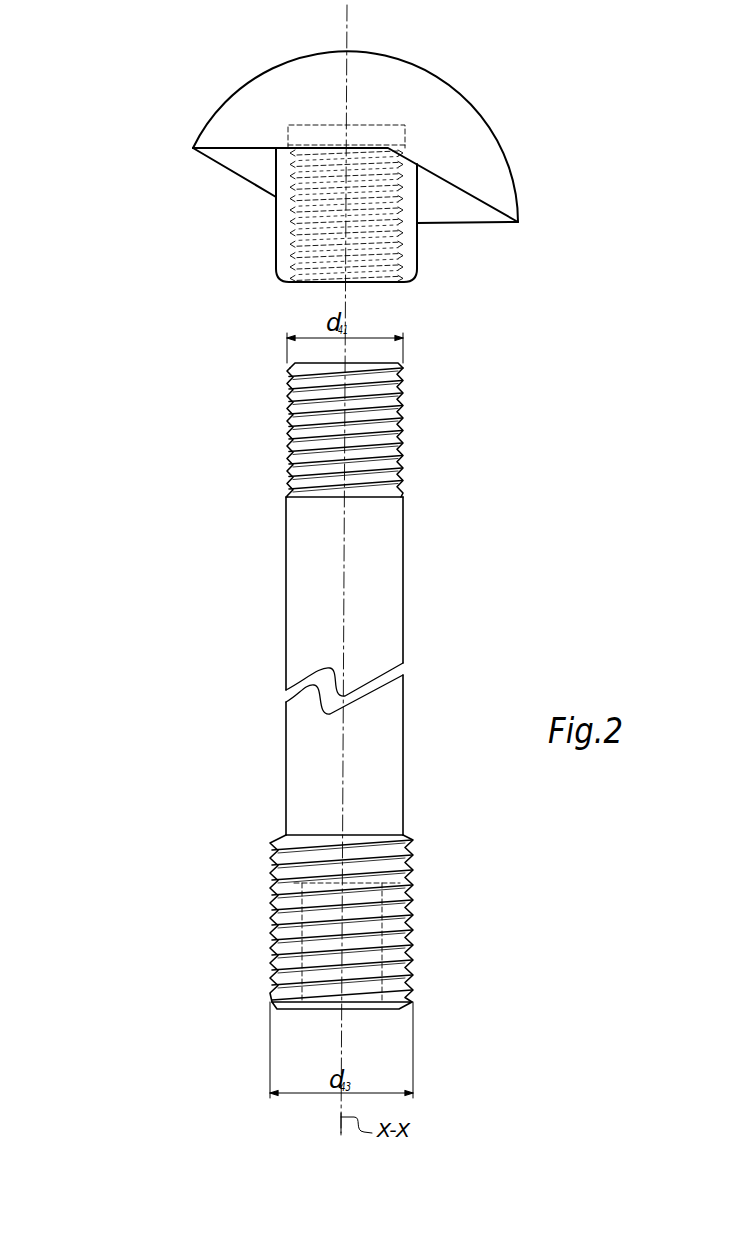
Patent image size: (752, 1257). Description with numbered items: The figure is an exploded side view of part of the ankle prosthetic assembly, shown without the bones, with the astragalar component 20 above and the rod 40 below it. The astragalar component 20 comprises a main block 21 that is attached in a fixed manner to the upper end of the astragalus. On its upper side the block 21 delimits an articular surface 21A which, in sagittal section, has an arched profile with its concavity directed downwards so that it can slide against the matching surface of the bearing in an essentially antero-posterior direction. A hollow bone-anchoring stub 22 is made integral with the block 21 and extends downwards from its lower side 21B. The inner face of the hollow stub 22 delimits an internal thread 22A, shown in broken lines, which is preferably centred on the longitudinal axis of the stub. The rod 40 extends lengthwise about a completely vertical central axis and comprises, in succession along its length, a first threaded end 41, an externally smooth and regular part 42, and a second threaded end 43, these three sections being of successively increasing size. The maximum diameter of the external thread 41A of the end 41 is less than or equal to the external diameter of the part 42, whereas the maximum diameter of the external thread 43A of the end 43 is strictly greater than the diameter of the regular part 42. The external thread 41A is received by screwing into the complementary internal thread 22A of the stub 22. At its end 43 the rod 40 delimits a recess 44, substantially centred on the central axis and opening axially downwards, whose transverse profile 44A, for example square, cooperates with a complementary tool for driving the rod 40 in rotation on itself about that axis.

The astragalar component 20 is at (250, 83).
The main block 21 is at (223, 135).
The articular surface 21A is at (465, 97).
The lower side 21B is at (465, 198).
The hollow bone-anchoring stub 22 is at (283, 254).
The internal thread 22A is at (370, 252).
The rod 40 is at (181, 1010).
The first threaded end 41 is at (247, 350).
The external thread 41A is at (400, 407).
The externally smooth and regular part 42 is at (245, 853).
The second threaded end 43 is at (245, 862).
The external thread 43A is at (413, 950).
The recess 44 is at (320, 1010).
The transverse profile 44A is at (383, 961).